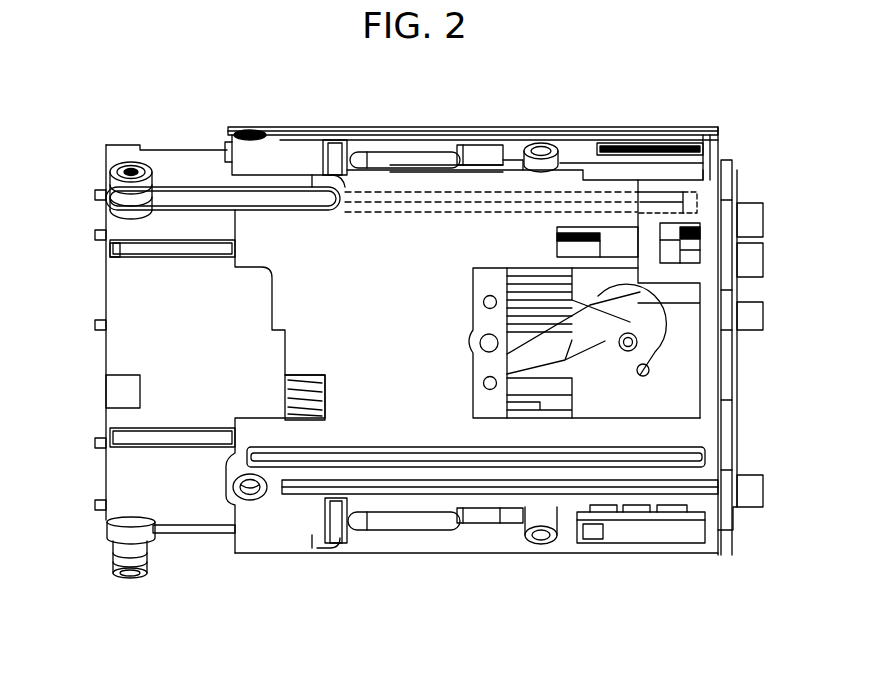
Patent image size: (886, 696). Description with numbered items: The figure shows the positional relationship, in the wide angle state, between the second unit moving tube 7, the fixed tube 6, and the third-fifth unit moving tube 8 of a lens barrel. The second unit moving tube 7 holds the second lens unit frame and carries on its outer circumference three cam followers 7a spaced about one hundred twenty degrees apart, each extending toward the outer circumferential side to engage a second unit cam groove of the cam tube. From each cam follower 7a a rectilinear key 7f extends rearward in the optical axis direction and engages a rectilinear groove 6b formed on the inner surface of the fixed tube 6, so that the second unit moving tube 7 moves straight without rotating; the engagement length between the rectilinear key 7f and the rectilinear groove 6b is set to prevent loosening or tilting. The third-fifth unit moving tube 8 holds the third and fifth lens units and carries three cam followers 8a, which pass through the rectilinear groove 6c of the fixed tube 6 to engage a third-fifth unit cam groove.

The fixed tube 6 is at (296, 152).
The rectilinear groove 6b is at (433, 200).
The rectilinear groove 6c is at (405, 156).
The second unit moving tube 7 is at (178, 150).
The cam follower 7a is at (133, 578).
The rectilinear key 7f is at (197, 208).
The third-fifth unit moving tube 8 is at (577, 353).
The cam follower 8a is at (547, 142).